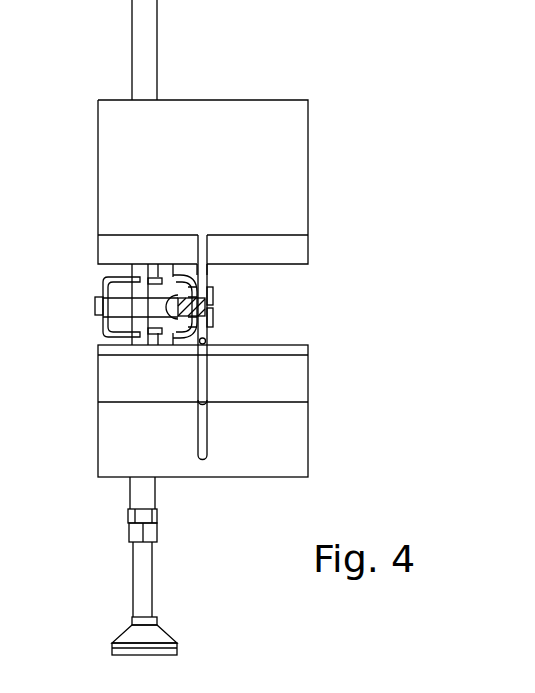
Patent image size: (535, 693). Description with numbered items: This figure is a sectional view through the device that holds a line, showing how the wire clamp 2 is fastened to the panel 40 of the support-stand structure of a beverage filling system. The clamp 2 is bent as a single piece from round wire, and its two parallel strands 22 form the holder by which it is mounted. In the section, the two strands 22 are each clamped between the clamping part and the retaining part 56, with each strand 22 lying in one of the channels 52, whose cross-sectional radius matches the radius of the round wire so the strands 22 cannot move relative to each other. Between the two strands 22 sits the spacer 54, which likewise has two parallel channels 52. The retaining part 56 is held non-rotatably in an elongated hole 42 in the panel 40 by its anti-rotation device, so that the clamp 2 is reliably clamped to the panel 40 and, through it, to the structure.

The clamp 2 is at (207, 273).
The strand 22 is at (207, 250).
The panel 40 is at (177, 278).
The elongated hole 42 is at (187, 312).
The channel 52 is at (208, 292).
The spacer 54 is at (208, 318).
The retaining part 56 is at (190, 315).